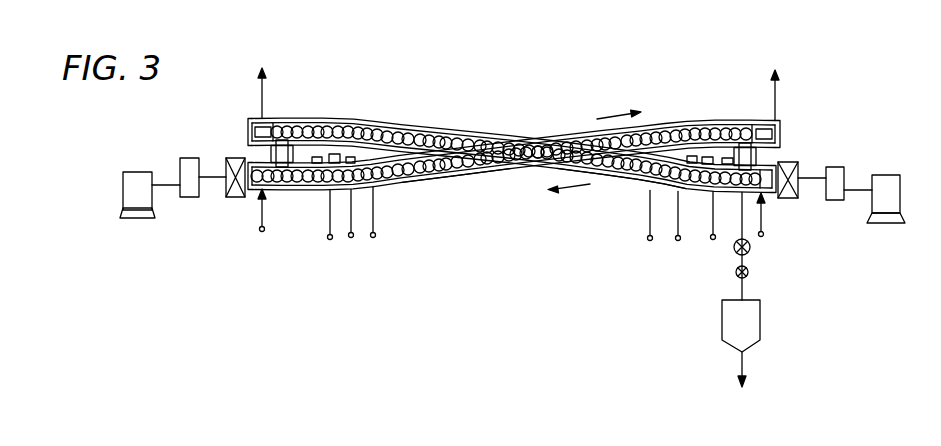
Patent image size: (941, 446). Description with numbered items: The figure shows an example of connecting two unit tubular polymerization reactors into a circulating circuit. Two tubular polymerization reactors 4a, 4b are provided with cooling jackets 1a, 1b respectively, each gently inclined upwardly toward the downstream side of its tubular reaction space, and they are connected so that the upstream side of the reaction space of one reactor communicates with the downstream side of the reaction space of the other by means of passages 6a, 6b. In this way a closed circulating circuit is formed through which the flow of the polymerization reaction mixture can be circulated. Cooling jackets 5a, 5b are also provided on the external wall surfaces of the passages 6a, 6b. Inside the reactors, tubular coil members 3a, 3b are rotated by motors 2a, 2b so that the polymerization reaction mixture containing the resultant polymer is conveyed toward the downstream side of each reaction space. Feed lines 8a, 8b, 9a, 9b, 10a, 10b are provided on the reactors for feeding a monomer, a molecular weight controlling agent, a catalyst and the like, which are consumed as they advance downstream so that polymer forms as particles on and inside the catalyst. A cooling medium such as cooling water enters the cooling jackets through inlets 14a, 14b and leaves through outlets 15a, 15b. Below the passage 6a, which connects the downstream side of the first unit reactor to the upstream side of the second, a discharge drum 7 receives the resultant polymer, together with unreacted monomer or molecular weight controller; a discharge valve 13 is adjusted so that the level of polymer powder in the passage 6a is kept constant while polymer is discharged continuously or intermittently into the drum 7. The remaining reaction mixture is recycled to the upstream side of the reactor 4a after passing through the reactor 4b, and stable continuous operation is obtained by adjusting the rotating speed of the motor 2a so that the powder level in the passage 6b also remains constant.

The cooling jacket 1a is at (690, 122).
The cooling jacket 1b is at (478, 126).
The motor 2a is at (132, 172).
The motor 2b is at (888, 175).
The tubular coil member 3a is at (462, 188).
The tubular coil member 3b is at (612, 178).
The tubular polymerization reactor 4a is at (556, 134).
The tubular polymerization reactor 4b is at (412, 127).
The cooling jacket 5a is at (765, 162).
The cooling jacket 5b is at (262, 157).
The passage 6a is at (758, 152).
The passage 6b is at (280, 154).
The discharge drum 7 is at (760, 320).
The feed line 8a is at (374, 238).
The feed line 8b is at (678, 241).
The feed line 9a is at (351, 238).
The feed line 9b is at (649, 241).
The feed line 10a is at (329, 240).
The feed line 10b is at (712, 240).
The discharge valve 13 is at (750, 252).
The cooling medium inlet 14a is at (261, 223).
The cooling medium inlet 14b is at (779, 222).
The cooling medium outlet 15a is at (779, 86).
The cooling medium outlet 15b is at (283, 89).